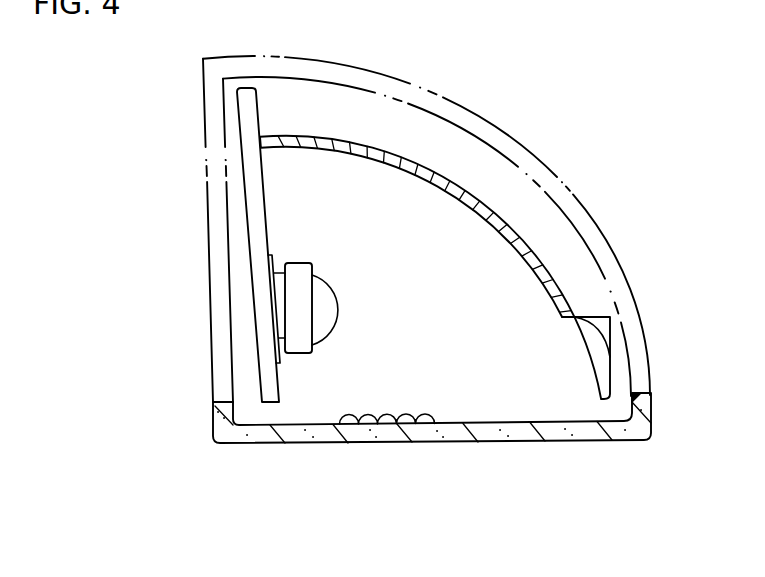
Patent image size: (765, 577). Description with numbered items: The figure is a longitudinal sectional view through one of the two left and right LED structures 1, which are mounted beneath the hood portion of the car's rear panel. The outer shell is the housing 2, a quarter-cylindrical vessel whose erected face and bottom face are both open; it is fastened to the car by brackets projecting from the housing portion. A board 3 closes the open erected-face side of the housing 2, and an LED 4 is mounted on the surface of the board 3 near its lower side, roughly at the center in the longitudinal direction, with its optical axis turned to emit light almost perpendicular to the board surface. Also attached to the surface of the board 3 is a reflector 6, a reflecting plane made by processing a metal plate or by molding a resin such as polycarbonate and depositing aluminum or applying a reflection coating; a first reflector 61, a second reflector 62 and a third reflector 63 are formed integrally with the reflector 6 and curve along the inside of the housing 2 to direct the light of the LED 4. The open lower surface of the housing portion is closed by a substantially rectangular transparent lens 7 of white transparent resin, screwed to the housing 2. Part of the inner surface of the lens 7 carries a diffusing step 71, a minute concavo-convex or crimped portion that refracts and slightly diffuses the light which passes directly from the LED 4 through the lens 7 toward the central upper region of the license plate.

The LED structure 1 is at (524, 143).
The housing 2 is at (612, 255).
The board 3 is at (250, 200).
The LED 4 is at (322, 315).
The reflector 6 is at (435, 172).
The first reflector 61 is at (487, 219).
The second reflector 62 is at (590, 353).
The third reflector 63 is at (604, 334).
The lens 7 is at (565, 441).
The diffusing step 71 is at (392, 415).